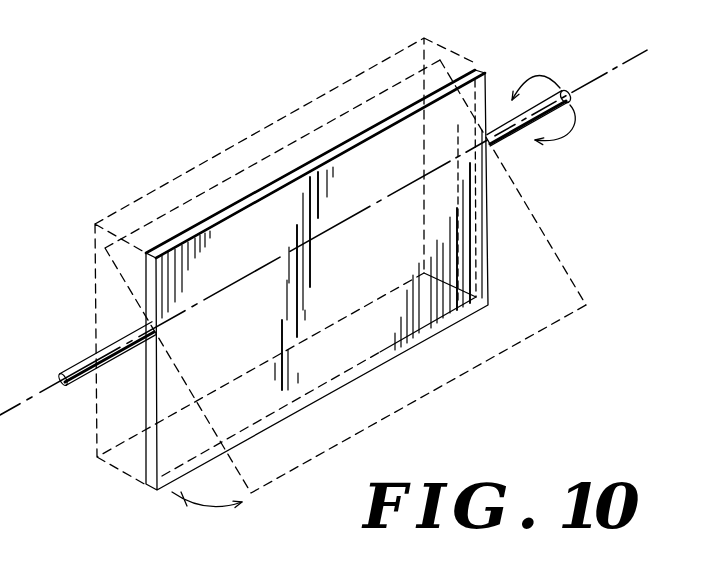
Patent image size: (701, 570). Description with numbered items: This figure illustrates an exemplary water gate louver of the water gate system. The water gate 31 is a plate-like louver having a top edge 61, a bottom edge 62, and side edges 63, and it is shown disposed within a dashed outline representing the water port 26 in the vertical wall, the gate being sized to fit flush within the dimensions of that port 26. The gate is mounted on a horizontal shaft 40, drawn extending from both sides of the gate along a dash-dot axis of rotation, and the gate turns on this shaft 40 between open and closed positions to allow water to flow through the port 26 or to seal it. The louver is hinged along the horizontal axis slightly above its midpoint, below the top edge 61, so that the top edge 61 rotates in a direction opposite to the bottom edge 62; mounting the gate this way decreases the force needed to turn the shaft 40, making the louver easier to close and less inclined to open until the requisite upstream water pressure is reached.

The water port 26 is at (172, 196).
The water gate 31 is at (569, 290).
The shaft 40 is at (92, 355).
The top edge 61 is at (468, 66).
The bottom edge 62 is at (493, 360).
The side edges 63 is at (486, 198).